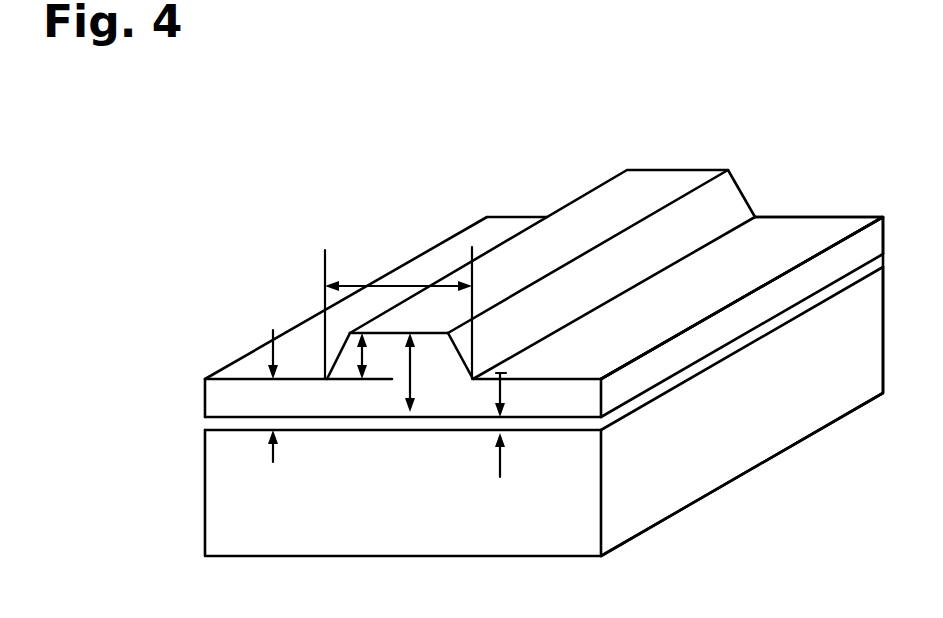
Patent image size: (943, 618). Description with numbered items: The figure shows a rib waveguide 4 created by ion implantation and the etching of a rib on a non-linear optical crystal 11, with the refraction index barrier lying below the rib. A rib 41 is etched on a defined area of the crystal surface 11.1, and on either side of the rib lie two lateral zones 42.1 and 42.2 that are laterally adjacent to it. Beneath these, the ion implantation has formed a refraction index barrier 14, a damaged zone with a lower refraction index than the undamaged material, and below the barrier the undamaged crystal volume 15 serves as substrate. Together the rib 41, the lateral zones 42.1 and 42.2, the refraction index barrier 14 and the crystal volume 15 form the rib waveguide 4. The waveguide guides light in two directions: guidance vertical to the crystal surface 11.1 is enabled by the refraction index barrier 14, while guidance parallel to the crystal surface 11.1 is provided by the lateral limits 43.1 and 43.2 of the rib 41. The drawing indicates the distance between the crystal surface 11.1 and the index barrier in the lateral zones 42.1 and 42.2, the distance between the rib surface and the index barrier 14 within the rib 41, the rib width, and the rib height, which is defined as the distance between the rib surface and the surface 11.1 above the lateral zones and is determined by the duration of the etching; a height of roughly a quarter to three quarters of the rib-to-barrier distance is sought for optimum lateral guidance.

The rib waveguide 4 is at (745, 150).
The rib 41 is at (648, 175).
The crystal surface 11.1 is at (737, 262).
The lateral limit of the rib 43.2 is at (482, 346).
The lateral limit of the rib 43.1 is at (345, 338).
The lateral zone 42.1 is at (212, 394).
The lateral zone 42.2 is at (527, 395).
The refraction index barrier 14 is at (212, 425).
The crystal volume 15 is at (212, 521).
The crystal 11 is at (663, 487).